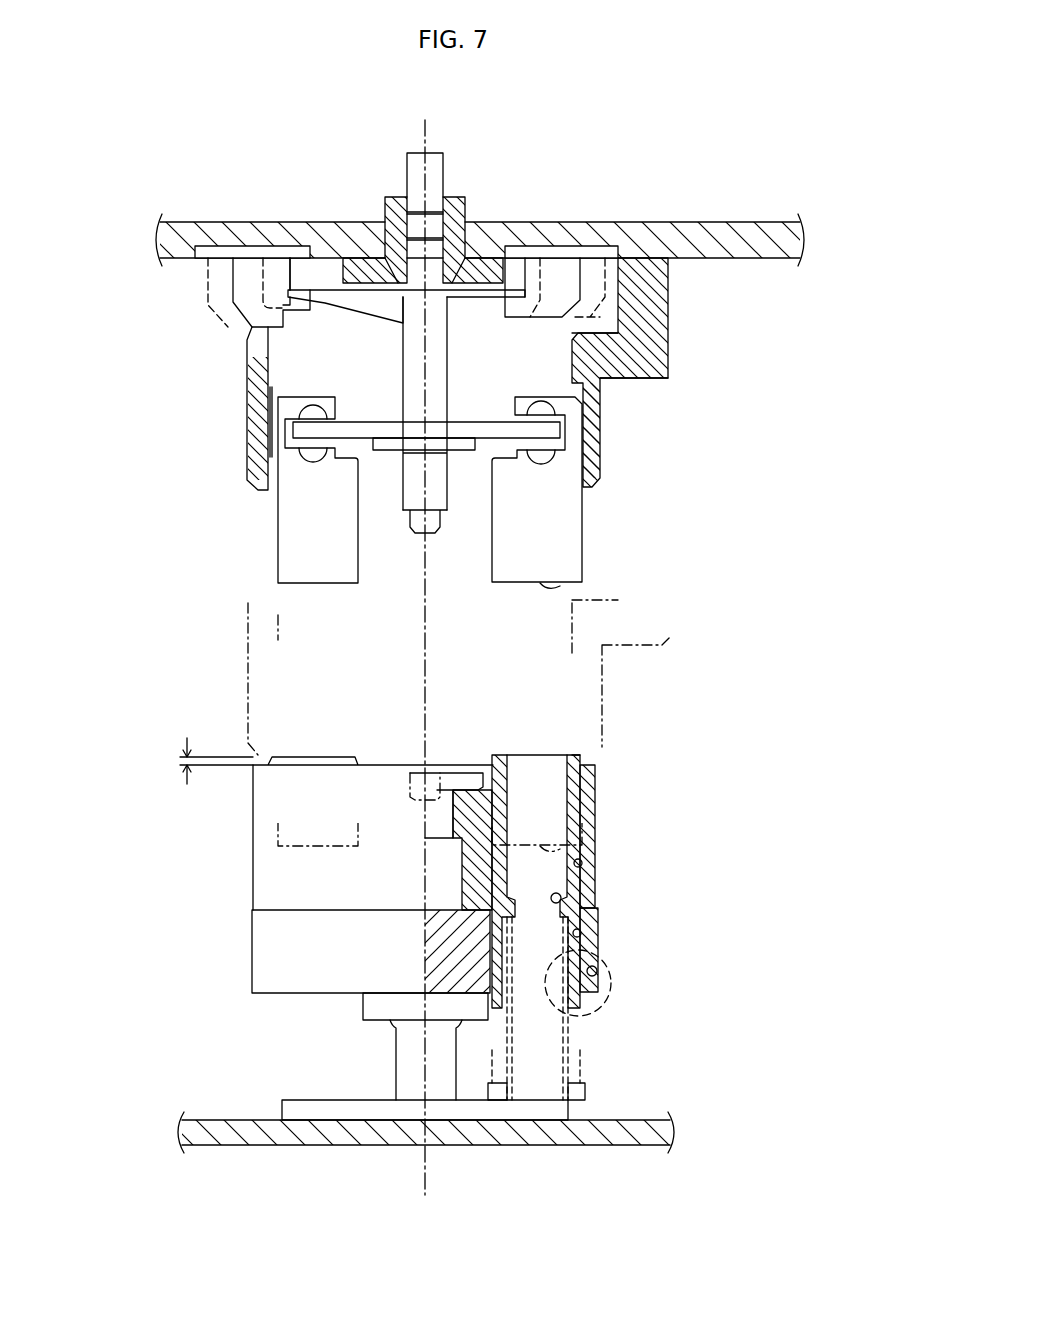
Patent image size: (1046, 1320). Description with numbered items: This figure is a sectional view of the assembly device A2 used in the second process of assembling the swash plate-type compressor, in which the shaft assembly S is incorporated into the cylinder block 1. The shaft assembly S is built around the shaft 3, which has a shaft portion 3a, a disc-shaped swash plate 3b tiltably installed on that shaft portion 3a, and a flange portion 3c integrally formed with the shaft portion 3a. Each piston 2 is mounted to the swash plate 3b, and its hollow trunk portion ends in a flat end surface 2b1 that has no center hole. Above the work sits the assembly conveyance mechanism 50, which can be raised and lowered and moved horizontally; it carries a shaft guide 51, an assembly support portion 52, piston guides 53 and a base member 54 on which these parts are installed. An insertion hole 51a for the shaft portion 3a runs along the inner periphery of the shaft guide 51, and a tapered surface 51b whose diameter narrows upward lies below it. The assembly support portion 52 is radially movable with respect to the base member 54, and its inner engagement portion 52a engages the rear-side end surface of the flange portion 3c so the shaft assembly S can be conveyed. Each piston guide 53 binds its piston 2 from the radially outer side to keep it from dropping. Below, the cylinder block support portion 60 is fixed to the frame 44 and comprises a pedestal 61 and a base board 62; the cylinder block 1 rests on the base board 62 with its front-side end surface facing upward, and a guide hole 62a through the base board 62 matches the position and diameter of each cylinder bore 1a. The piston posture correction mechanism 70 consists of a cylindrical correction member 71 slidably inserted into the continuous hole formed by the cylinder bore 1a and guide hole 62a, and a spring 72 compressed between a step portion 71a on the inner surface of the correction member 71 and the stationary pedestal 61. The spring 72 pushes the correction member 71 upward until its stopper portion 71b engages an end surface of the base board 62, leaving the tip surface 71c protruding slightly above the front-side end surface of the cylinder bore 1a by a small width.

The cylinder block 1 is at (256, 860).
The cylinder bore 1a is at (582, 864).
The piston 2 is at (285, 530).
The end surface 2b1 is at (560, 586).
The shaft 3 is at (428, 443).
The shaft portion 3a is at (447, 383).
The swash plate 3b is at (364, 430).
The flange portion 3c is at (352, 300).
The frame 44 is at (518, 1140).
The assembly conveyance mechanism 50 is at (732, 340).
The shaft guide 51 is at (458, 206).
The insertion hole 51a is at (414, 212).
The tapered surface 51b is at (408, 262).
The assembly support portion 52 is at (250, 263).
The engagement portion 52a is at (290, 305).
The piston guide 53 is at (256, 430).
The base member 54 is at (668, 240).
The cylinder block support portion 60 is at (233, 996).
The pedestal 61 is at (290, 1112).
The base board 62 is at (252, 945).
The guide hole 62a is at (581, 934).
The piston posture correction mechanism 70 is at (578, 809).
The correction member 71 is at (578, 830).
The step portion 71a is at (560, 898).
The stopper portion 71b is at (596, 972).
The tip surface 71c is at (575, 753).
The spring 72 is at (572, 1031).
The shaft assembly S is at (449, 541).
The portion P is at (612, 990).
The assembly device A2 is at (712, 740).